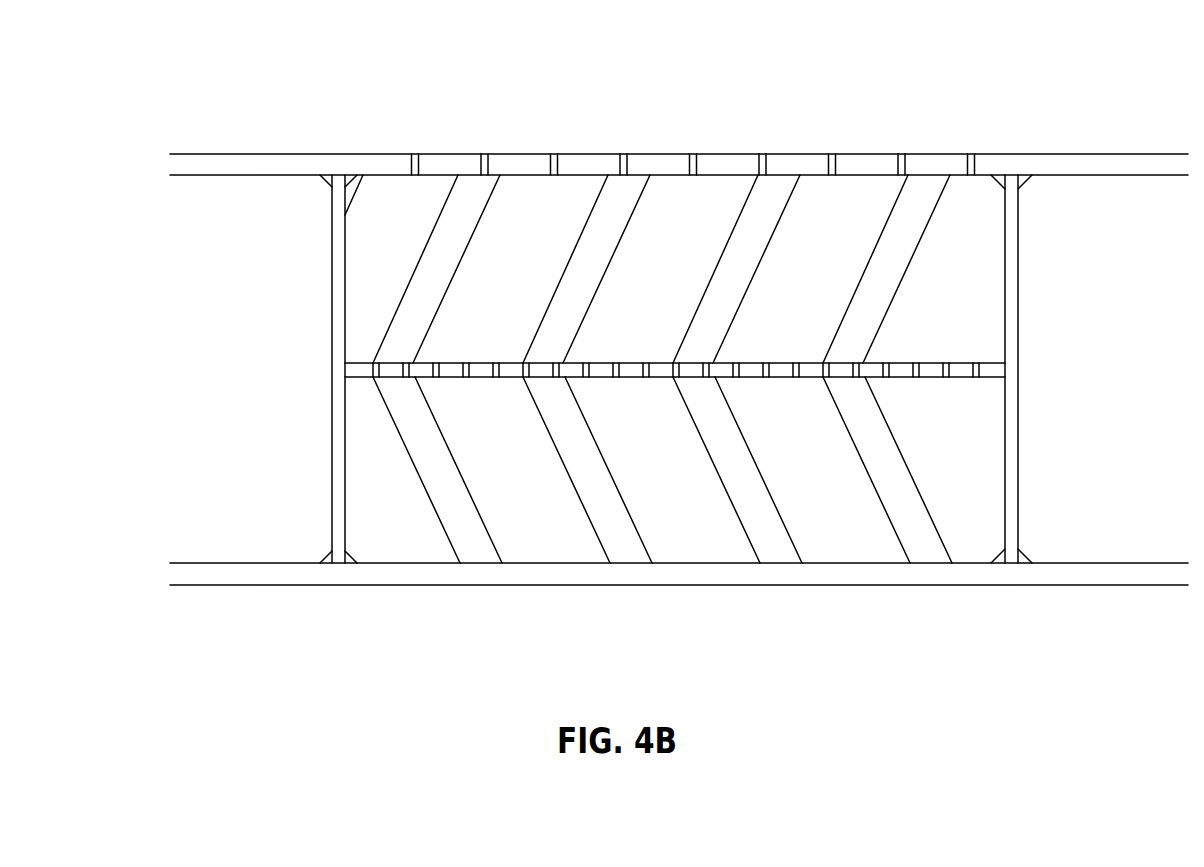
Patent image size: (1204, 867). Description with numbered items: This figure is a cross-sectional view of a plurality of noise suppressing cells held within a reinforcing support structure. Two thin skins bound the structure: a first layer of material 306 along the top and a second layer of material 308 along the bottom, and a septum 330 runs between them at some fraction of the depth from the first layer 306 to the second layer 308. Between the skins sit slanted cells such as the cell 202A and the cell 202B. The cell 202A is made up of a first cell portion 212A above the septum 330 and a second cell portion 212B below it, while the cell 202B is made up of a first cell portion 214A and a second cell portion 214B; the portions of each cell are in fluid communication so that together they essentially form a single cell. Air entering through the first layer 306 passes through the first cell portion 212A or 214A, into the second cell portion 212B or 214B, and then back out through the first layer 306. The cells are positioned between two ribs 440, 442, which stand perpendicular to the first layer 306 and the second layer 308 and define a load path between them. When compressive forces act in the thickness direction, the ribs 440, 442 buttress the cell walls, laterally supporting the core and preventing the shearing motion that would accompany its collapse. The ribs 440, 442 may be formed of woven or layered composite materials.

The first layer of material 306 is at (315, 153).
The second layer of material 308 is at (268, 585).
The septum 330 is at (357, 363).
The rib 440 is at (332, 476).
The rib 442 is at (1018, 419).
The cell 202A is at (363, 362).
The cell 202B is at (632, 362).
The first cell portion 212A is at (405, 292).
The second cell portion 212B is at (447, 530).
The first cell portion 214A is at (643, 203).
The second cell portion 214B is at (596, 528).